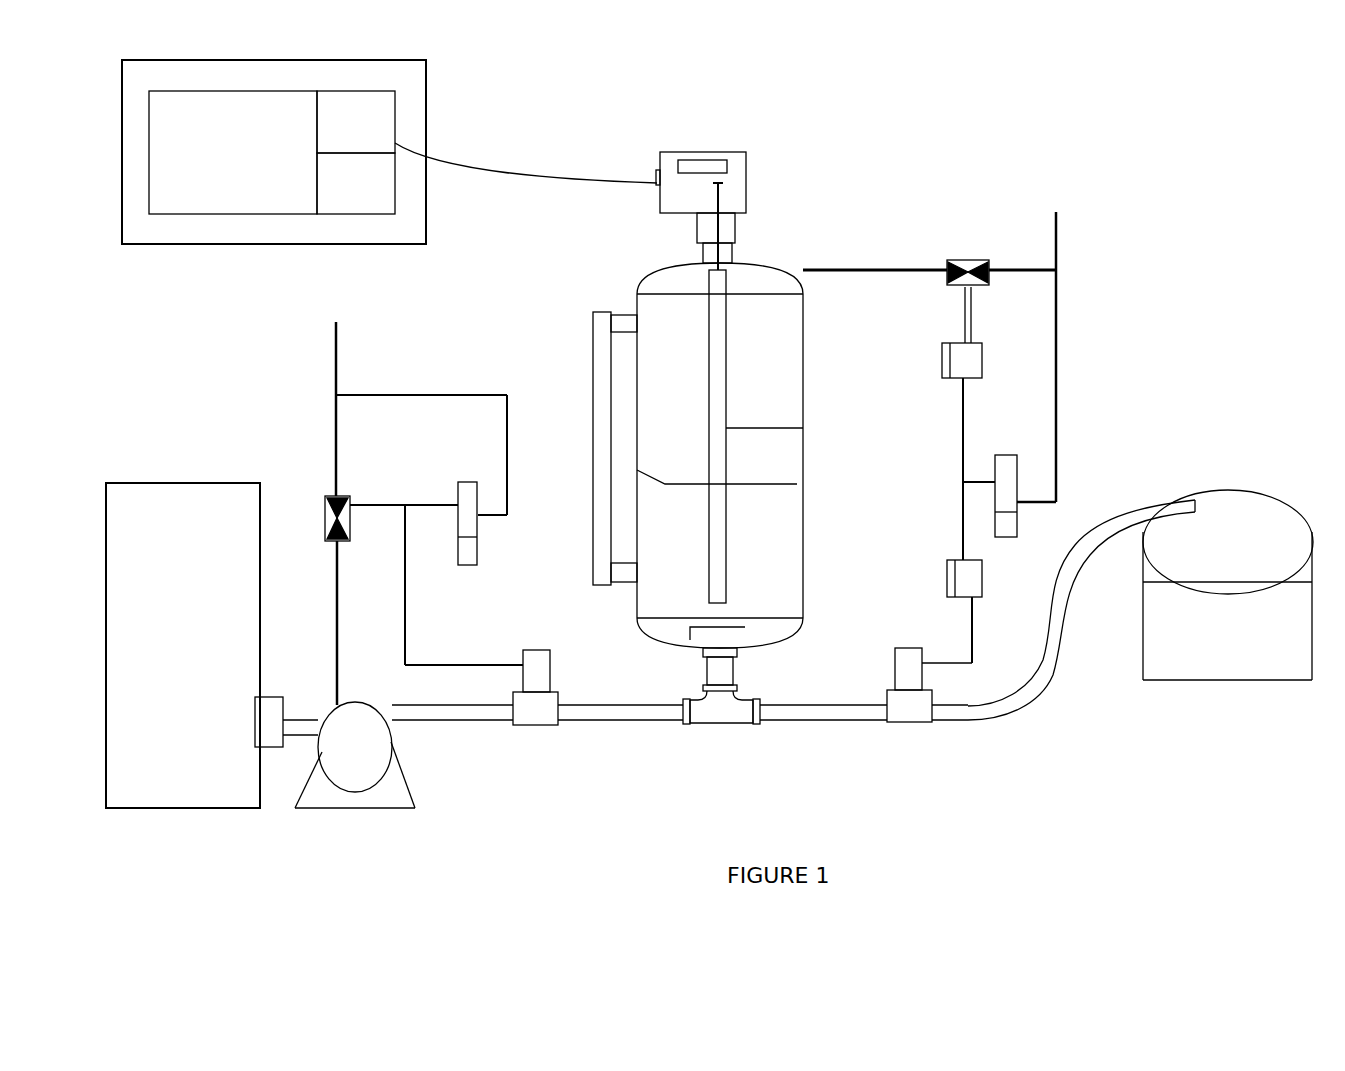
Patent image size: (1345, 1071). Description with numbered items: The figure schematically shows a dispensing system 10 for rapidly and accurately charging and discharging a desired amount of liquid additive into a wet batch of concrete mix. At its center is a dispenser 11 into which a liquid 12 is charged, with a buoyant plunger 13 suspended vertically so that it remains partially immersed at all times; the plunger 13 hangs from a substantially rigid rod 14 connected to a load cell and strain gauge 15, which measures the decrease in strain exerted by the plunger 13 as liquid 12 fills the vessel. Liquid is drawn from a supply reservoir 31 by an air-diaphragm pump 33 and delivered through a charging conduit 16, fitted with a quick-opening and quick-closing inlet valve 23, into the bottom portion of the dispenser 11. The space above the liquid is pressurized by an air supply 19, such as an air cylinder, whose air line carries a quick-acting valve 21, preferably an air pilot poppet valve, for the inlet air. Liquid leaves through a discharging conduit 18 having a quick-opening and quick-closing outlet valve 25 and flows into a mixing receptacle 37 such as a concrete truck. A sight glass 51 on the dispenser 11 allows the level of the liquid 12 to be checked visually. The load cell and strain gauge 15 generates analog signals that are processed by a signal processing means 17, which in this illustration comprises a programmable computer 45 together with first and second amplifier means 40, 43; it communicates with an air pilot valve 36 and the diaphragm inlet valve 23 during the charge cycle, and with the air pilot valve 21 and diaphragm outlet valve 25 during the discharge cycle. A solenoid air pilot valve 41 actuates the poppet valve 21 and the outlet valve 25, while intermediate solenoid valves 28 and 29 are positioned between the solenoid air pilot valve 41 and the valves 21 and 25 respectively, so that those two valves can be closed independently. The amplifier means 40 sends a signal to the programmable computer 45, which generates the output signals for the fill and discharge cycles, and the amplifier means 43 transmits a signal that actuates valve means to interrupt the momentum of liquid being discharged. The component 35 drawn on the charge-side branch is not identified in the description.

The dispensing system 10 is at (228, 395).
The dispenser 11 is at (803, 357).
The liquid 12 is at (776, 527).
The plunger 13 is at (803, 431).
The rod 14 is at (722, 222).
The load cell and strain gauge 15 is at (746, 163).
The charging conduit 16 is at (615, 723).
The signal processing means 17 is at (326, 152).
The discharging conduit 18 is at (780, 723).
The air supply 19 is at (333, 322).
The quick-acting valve 21 is at (947, 262).
The inlet valve 23 is at (550, 678).
The outlet valve 25 is at (905, 723).
The solenoid valve 28 is at (942, 360).
The solenoid valve 29 is at (947, 575).
The supply reservoir 31 is at (212, 645).
The air-diaphragm pump 33 is at (395, 742).
The sensor 35 is at (478, 525).
The air pilot valve 36 is at (350, 497).
The mixing receptacle 37 is at (1283, 680).
The amplifier means 40 is at (356, 183).
The solenoid air pilot valve 41 is at (1017, 520).
The amplifier means 43 is at (356, 122).
The programmable computer 45 is at (233, 152).
The sight glass 51 is at (594, 390).